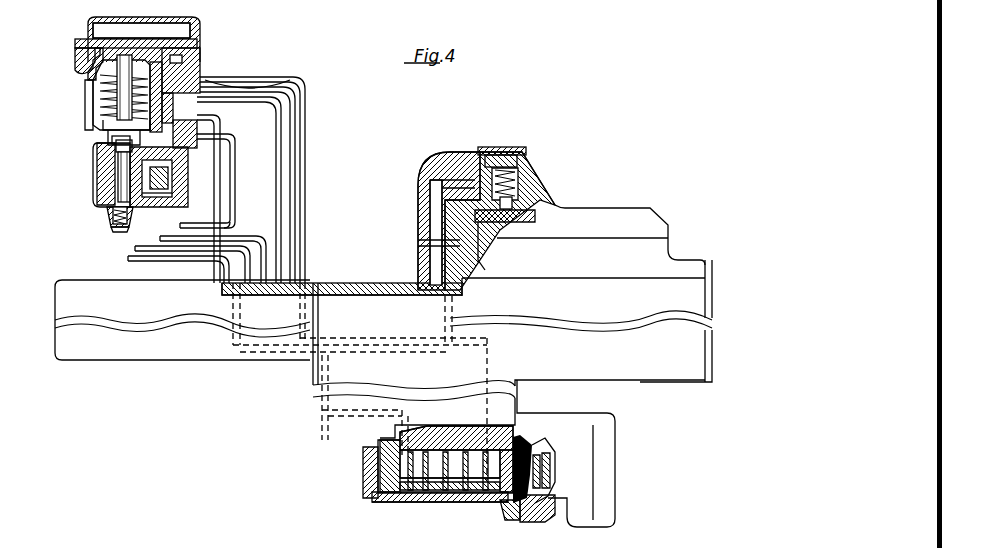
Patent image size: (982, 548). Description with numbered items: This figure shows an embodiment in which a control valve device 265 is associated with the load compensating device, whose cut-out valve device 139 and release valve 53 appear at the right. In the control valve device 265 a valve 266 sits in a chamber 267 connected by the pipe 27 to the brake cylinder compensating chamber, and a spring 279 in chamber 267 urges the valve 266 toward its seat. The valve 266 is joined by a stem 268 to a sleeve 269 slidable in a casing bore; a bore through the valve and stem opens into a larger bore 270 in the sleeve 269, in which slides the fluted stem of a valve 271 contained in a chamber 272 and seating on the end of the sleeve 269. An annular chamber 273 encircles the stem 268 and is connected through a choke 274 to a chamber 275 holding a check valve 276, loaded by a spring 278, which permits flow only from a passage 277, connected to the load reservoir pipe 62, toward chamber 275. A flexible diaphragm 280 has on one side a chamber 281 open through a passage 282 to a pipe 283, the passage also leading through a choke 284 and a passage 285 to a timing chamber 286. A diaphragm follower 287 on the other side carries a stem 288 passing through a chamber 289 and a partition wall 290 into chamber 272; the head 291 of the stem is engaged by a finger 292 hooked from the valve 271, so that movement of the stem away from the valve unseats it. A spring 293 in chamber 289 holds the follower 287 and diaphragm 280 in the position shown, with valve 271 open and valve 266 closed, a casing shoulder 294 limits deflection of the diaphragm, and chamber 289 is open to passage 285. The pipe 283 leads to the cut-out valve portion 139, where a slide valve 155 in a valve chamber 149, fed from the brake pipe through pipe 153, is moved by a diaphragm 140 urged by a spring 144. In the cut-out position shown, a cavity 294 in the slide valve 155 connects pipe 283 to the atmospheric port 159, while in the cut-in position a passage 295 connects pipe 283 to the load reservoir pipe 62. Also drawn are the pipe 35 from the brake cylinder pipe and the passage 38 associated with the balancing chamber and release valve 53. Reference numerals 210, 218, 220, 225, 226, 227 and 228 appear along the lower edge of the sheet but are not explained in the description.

The control valve device 265 is at (85, 17).
The diaphragm chamber 281 is at (76, 45).
The spring 293 is at (86, 82).
The diaphragm follower 287 is at (90, 72).
The chamber 289 is at (90, 100).
The stem 288 is at (118, 92).
The partition wall 290 is at (100, 118).
The finger 292 is at (105, 135).
The head 291 is at (97, 148).
The valve 271 is at (118, 153).
The sleeve 269 is at (95, 165).
The bore 270 is at (118, 176).
The stem 268 is at (110, 190).
The valve 266 is at (108, 208).
The spring 279 is at (112, 222).
The chamber 267 is at (122, 232).
The timing chamber 286 is at (188, 27).
The flexible diaphragm 280 is at (192, 38).
The choke 284 is at (190, 60).
The passage 285 is at (254, 70).
The passage 282 is at (300, 78).
The pipe 283 is at (306, 120).
The shoulder 294 is at (215, 104).
The chamber 272 is at (205, 130).
The spring 278 is at (205, 150).
The chamber 275 is at (185, 165).
The check valve 276 is at (160, 180).
The passage 277 is at (185, 185).
The choke 274 is at (160, 192).
The annular chamber 273 is at (185, 202).
The pipe 27 is at (246, 216).
The pipe 153 is at (143, 260).
The load reservoir pipe 62 is at (165, 248).
The pipe 35 is at (200, 258).
The passage 38 is at (417, 210).
The release valve 53 is at (525, 185).
The slide valve 155 is at (395, 468).
The atmospheric passage 159 is at (525, 433).
The spring 144 is at (548, 464).
The flexible diaphragm 140 is at (546, 510).
The valve chamber 149 is at (512, 520).
The passage 295 is at (420, 482).
The cut-out valve device 139 is at (447, 500).
The plate 218 is at (214, 526).
The plate 226 is at (272, 526).
The plate 220 is at (350, 535).
The plate 210 is at (178, 540).
The plate 225 is at (224, 532).
The plate 227 is at (294, 532).
The plate 228 is at (372, 540).